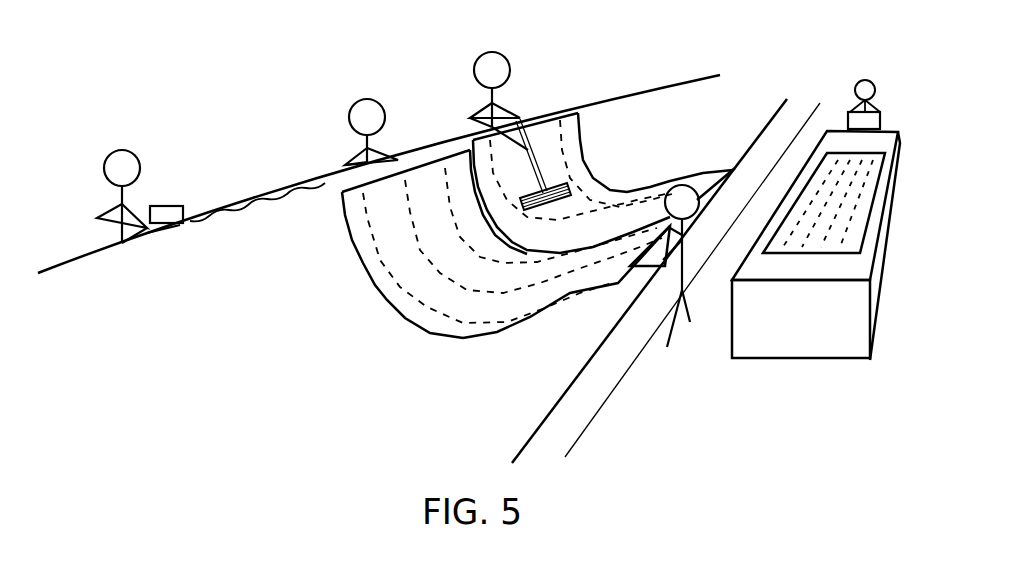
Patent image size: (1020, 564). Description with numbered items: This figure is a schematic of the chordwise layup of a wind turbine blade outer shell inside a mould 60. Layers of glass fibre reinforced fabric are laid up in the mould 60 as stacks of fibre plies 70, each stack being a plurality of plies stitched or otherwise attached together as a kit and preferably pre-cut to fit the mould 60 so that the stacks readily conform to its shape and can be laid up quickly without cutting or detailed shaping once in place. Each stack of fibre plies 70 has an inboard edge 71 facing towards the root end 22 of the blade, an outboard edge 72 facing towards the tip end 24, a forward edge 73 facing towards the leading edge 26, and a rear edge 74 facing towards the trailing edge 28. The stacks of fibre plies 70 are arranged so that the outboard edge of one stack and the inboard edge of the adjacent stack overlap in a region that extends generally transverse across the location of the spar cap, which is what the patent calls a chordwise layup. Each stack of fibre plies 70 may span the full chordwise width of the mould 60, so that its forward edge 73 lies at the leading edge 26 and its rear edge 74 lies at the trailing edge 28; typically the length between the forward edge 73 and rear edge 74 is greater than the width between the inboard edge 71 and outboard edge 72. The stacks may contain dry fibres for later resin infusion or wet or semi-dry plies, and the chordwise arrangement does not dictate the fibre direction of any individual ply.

The root end 22 is at (730, 105).
The tip end 24 is at (363, 358).
The leading edge 26 is at (289, 165).
The trailing edge 28 is at (606, 364).
The mould 60 is at (686, 113).
The stack of fibre plies 70 is at (605, 195).
The inboard edge 71 is at (373, 288).
The outboard edge 72 is at (473, 227).
The forward edge 73 is at (447, 163).
The rear edge 74 is at (703, 187).